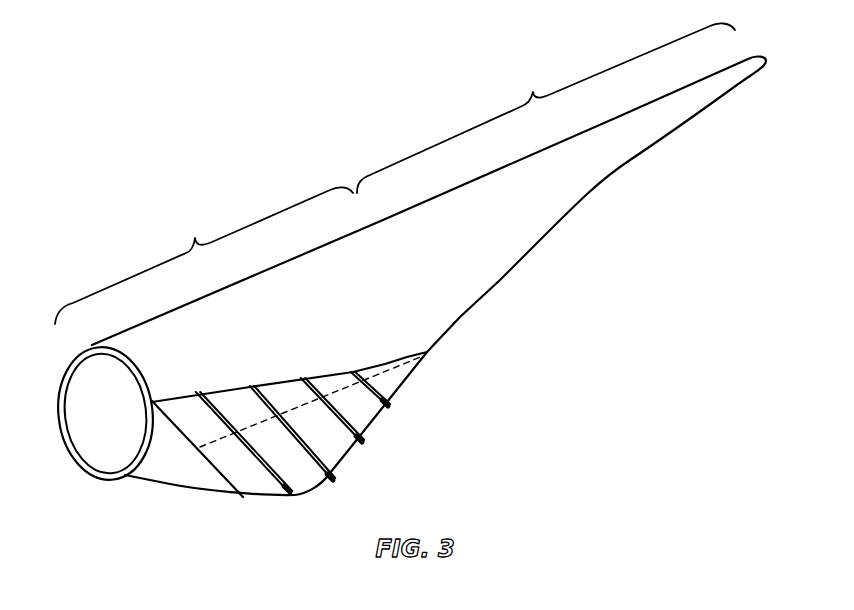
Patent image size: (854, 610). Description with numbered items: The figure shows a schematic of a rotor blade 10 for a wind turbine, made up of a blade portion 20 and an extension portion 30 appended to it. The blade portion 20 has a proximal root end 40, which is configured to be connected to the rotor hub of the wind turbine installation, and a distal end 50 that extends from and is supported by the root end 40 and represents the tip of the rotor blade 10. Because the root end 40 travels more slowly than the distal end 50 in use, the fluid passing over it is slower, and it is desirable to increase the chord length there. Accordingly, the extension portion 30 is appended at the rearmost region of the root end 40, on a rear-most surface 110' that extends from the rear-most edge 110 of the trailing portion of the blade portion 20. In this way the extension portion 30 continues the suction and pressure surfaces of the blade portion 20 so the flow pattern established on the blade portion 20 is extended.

The rotor blade 10 is at (180, 140).
The blade portion 20 is at (568, 185).
The extension portion 30 is at (403, 387).
The root end 40 is at (195, 238).
The distal end 50 is at (533, 92).
The rear-most edge 110 is at (437, 285).
The rear-most surface 110' is at (271, 457).